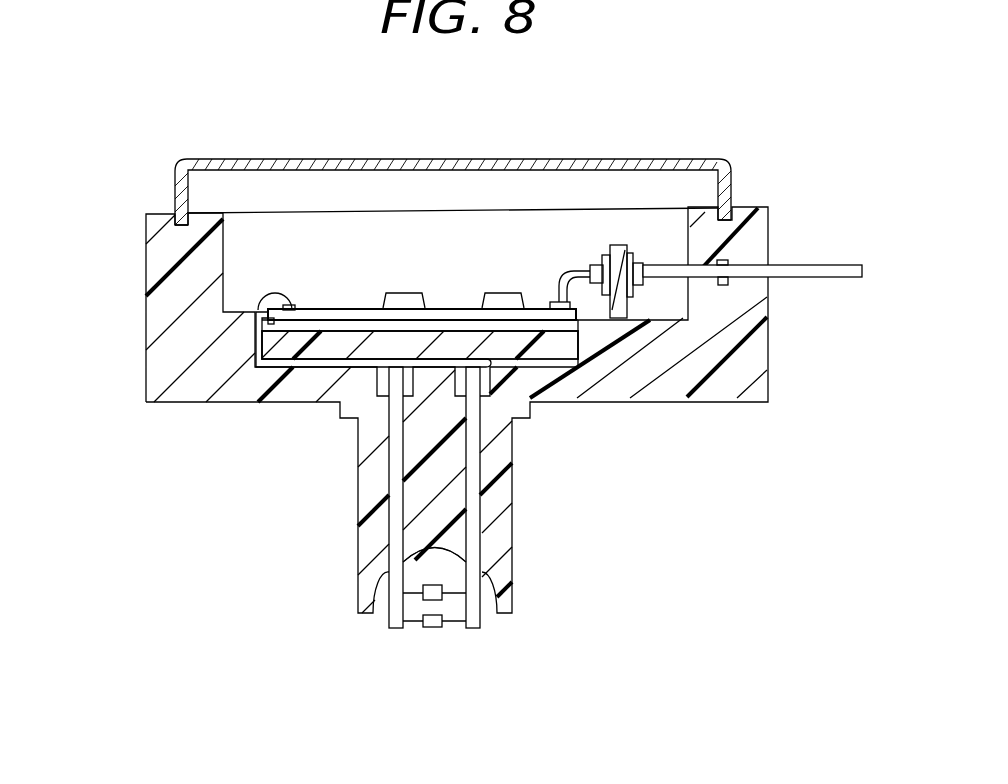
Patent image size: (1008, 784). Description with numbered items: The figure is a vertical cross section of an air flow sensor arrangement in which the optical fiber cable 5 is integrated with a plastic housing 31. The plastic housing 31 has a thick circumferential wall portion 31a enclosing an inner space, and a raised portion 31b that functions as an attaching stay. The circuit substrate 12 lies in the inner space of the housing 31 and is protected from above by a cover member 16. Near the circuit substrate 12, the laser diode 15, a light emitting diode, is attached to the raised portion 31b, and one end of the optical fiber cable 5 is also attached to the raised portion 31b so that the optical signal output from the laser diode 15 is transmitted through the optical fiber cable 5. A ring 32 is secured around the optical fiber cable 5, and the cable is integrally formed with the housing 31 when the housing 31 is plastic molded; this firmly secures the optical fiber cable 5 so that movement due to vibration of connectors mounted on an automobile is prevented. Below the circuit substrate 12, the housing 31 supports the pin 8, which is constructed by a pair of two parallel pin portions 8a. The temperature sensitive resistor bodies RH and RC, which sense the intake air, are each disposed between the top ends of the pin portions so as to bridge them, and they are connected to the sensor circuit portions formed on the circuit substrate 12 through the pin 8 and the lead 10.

The plastic housing 31 is at (226, 409).
The thick circumferential wall portion 31a is at (158, 252).
The raised portion 31b is at (616, 244).
The pin 8 is at (474, 510).
The pin portions 8a is at (398, 532).
The lead 10 is at (291, 369).
The circuit substrate 12 is at (341, 314).
The laser diode 15 is at (588, 266).
The cover member 16 is at (733, 169).
The ring 32 is at (728, 266).
The optical fiber cable 5 is at (833, 266).
The temperature sensitive resistor body RC is at (432, 594).
The temperature sensitive resistor body RH is at (432, 629).